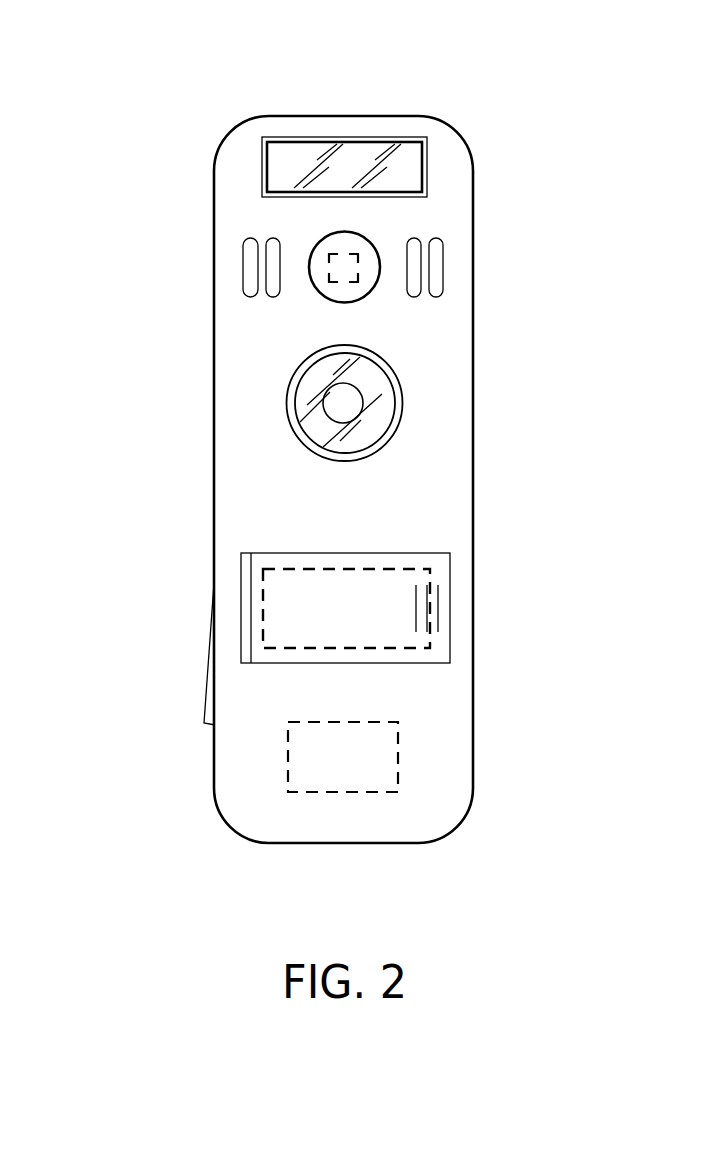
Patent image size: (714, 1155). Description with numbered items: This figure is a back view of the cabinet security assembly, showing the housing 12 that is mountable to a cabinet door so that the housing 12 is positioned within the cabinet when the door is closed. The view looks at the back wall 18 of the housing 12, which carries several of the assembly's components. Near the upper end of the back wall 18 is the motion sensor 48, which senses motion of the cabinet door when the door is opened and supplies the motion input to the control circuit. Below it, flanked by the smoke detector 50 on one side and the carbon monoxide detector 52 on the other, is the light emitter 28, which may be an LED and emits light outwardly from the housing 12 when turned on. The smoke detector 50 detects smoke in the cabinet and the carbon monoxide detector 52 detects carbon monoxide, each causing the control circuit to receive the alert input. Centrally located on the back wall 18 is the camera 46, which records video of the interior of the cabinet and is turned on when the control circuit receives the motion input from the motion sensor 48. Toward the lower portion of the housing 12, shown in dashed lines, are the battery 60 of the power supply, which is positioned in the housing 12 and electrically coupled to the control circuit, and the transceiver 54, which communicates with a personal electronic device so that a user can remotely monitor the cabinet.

The housing 12 is at (472, 172).
The back wall 18 is at (228, 469).
The light emitter 28 is at (332, 281).
The camera 46 is at (402, 403).
The motion sensor 48 is at (342, 147).
The smoke detector 50 is at (243, 261).
The carbon monoxide detector 52 is at (443, 265).
The transceiver 54 is at (398, 750).
The battery 60 is at (387, 568).